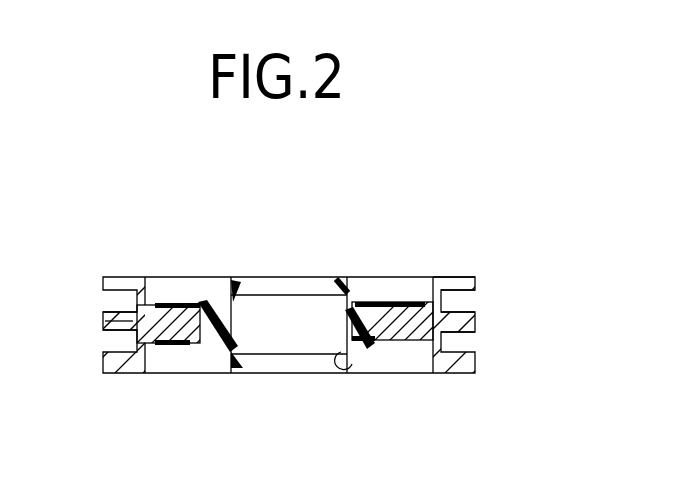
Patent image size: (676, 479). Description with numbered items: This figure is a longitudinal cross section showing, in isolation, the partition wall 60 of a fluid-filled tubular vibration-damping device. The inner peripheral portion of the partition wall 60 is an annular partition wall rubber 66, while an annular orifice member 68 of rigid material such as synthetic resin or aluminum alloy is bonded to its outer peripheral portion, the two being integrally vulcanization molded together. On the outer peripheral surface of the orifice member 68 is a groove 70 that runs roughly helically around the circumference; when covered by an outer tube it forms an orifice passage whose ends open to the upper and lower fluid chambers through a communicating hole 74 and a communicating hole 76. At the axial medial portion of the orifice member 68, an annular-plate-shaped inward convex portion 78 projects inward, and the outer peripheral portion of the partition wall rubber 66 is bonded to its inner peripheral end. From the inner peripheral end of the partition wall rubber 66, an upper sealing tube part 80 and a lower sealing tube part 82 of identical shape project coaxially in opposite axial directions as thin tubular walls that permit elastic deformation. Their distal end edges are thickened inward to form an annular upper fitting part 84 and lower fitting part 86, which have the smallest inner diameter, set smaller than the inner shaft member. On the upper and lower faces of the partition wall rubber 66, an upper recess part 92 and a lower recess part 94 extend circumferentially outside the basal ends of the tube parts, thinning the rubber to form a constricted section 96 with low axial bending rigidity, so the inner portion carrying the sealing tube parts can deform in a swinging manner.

The partition wall 60 is at (492, 241).
The partition wall rubber 66 is at (373, 299).
The orifice member 68 is at (123, 377).
The groove 70 is at (460, 289).
The communicating hole 74 is at (137, 313).
The communicating hole 76 is at (443, 333).
The inward convex portion 78 is at (182, 345).
The upper sealing tube part 80 is at (237, 297).
The lower sealing tube part 82 is at (343, 352).
The upper fitting part 84 is at (345, 290).
The lower fitting part 86 is at (233, 356).
The upper recess part 92 is at (223, 300).
The lower recess part 94 is at (356, 350).
The constricted section 96 is at (212, 343).